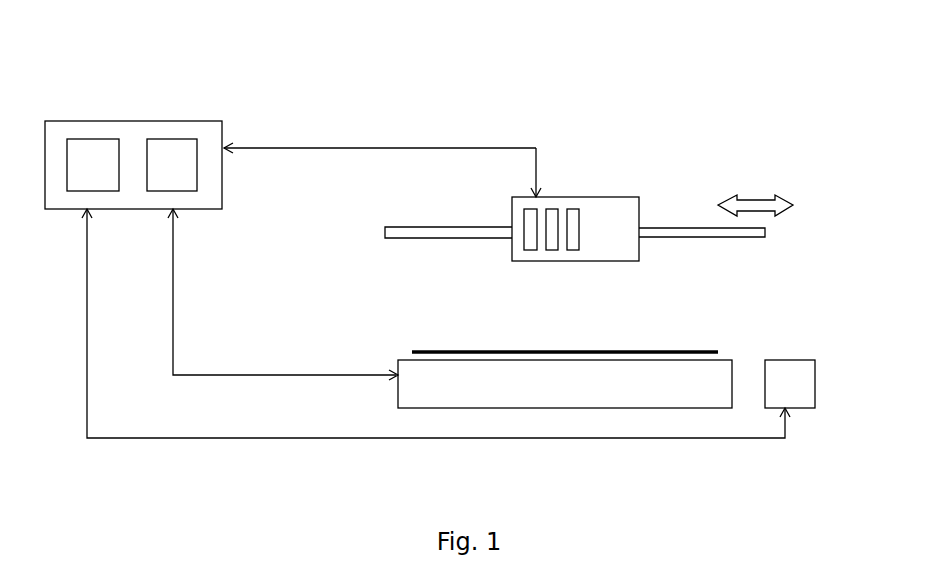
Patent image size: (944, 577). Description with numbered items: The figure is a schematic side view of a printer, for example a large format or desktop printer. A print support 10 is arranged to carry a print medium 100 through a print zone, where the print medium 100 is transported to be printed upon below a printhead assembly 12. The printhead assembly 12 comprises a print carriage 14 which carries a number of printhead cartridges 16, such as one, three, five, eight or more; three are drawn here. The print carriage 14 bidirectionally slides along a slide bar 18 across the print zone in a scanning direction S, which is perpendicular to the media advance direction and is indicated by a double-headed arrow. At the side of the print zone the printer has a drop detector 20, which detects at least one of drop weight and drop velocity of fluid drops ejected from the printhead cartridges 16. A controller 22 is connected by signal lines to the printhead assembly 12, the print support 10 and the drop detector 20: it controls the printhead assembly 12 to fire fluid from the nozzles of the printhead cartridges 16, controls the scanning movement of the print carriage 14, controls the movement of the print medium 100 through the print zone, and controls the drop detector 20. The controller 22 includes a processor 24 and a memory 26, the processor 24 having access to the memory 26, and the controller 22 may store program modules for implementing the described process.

The print support 10 is at (664, 388).
The print medium 100 is at (698, 350).
The printhead assembly 12 is at (617, 181).
The print carriage 14 is at (618, 220).
The printhead cartridges 16 is at (552, 212).
The slide bar 18 is at (757, 237).
The drop detector 20 is at (800, 388).
The controller 22 is at (173, 130).
The processor 24 is at (185, 162).
The memory 26 is at (95, 165).
The scanning direction S is at (755, 194).